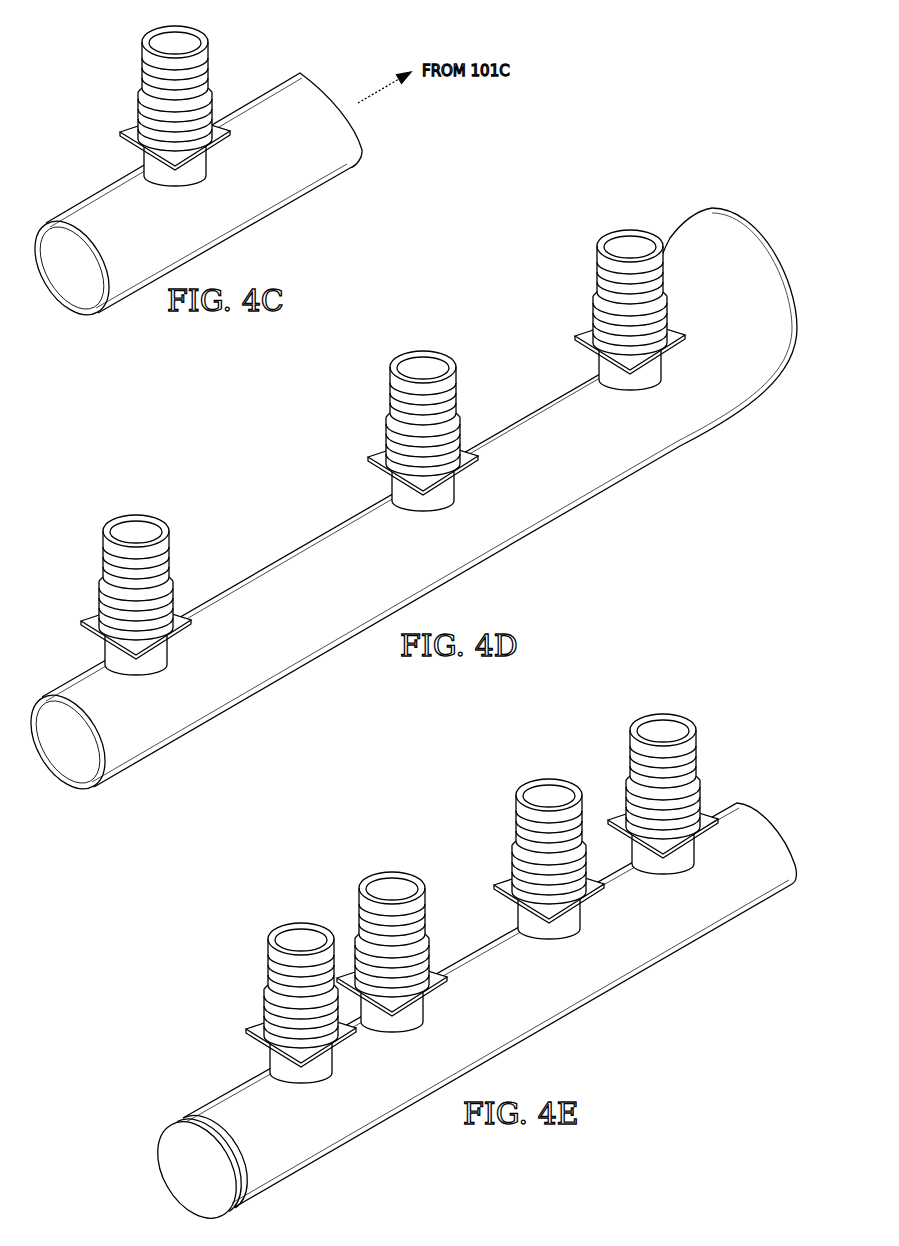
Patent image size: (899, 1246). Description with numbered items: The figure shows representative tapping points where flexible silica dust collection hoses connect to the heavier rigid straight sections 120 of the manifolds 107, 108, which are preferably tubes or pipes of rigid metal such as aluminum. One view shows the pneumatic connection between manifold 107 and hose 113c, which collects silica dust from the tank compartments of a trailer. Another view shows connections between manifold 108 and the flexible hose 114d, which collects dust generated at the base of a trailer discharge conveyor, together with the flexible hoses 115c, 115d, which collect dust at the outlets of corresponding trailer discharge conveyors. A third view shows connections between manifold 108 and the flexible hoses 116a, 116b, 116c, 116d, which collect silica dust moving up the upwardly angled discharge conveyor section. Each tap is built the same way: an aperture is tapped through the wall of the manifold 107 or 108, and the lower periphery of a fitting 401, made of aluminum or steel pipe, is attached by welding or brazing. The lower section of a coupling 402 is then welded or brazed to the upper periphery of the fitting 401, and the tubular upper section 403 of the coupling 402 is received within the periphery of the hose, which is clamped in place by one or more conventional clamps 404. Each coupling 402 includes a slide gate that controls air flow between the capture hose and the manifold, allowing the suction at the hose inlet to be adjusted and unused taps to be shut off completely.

In FIG. 4C, the manifold 107 is at (191, 200).
In FIG. 4D, the manifold 108 is at (406, 505).
In FIG. 4E, the manifold 108 is at (469, 1017).
In FIG. 4C, the straight section 120 is at (290, 232).
In FIG. 4D, the straight section 120 is at (613, 487).
In FIG. 4E, the straight section 120 is at (667, 957).
In FIG. 4C, the hose 113c is at (142, 72).
In FIG. 4D, the flexible hose 114d is at (597, 281).
In FIG. 4D, the flexible hose 115c is at (103, 563).
In FIG. 4D, the flexible hose 115d is at (390, 391).
In FIG. 4E, the flexible hose 116a is at (268, 957).
In FIG. 4E, the flexible hose 116b is at (359, 905).
In FIG. 4E, the flexible hose 116c is at (516, 814).
In FIG. 4E, the flexible hose 116d is at (630, 748).
In FIG. 4C, the fitting 401 is at (200, 176).
In FIG. 4D, the fitting 401 is at (657, 383).
In FIG. 4E, the fitting 401 is at (683, 874).
In FIG. 4C, the coupling 402 is at (128, 146).
In FIG. 4D, the coupling 402 is at (583, 347).
In FIG. 4E, the coupling 402 is at (707, 833).
In FIG. 4C, the tubular upper section 403 is at (140, 125).
In FIG. 4D, the tubular upper section 403 is at (593, 333).
In FIG. 4E, the tubular upper section 403 is at (697, 813).
In FIG. 4C, the clamp 404 is at (212, 93).
In FIG. 4D, the clamp 404 is at (668, 307).
In FIG. 4E, the clamp 404 is at (627, 787).